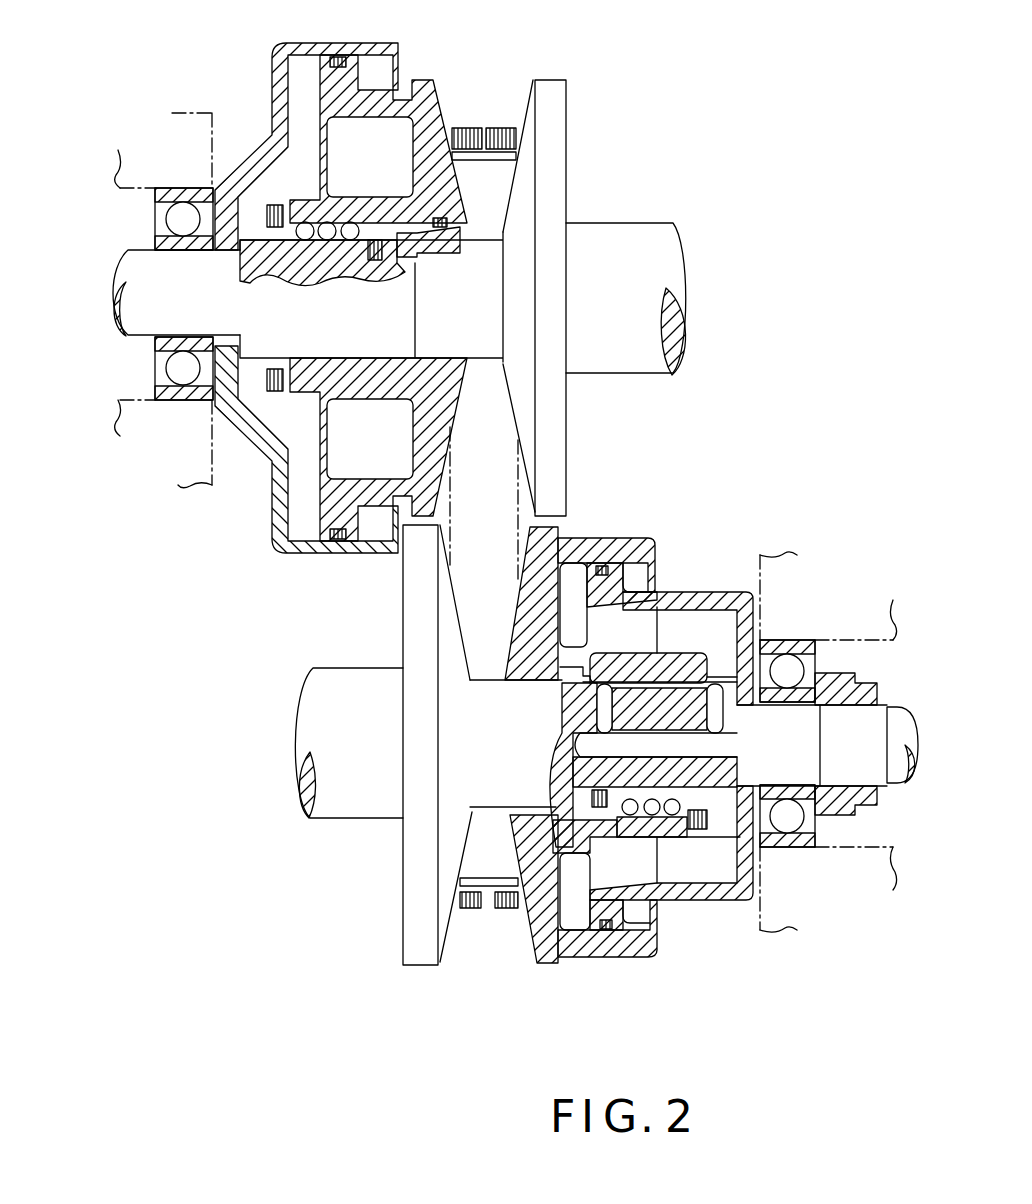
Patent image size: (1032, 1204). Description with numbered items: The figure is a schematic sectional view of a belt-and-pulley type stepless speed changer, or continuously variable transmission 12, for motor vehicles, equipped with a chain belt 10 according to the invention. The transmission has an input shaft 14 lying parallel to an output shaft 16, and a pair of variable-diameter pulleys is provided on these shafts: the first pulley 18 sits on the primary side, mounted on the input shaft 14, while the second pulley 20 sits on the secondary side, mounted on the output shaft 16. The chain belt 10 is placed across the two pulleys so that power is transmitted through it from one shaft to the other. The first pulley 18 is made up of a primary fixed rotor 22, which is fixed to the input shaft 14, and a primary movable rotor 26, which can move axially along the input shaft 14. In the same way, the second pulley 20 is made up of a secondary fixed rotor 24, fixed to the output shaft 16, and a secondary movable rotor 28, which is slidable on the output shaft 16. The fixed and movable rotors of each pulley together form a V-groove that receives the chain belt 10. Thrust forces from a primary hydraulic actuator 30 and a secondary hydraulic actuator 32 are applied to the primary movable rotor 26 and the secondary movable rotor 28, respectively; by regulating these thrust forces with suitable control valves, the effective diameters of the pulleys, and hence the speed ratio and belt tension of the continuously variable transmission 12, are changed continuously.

The chain belt 10 is at (482, 107).
The continuously variable transmission 12 is at (703, 147).
The input shaft 14 is at (130, 273).
The output shaft 16 is at (315, 712).
The first pulley 18 is at (572, 83).
The second pulley 20 is at (407, 972).
The primary fixed rotor 22 is at (552, 150).
The secondary fixed rotor 24 is at (418, 915).
The primary movable rotor 26 is at (425, 88).
The secondary movable rotor 28 is at (558, 942).
The primary hydraulic actuator 30 is at (298, 68).
The secondary hydraulic actuator 32 is at (713, 868).